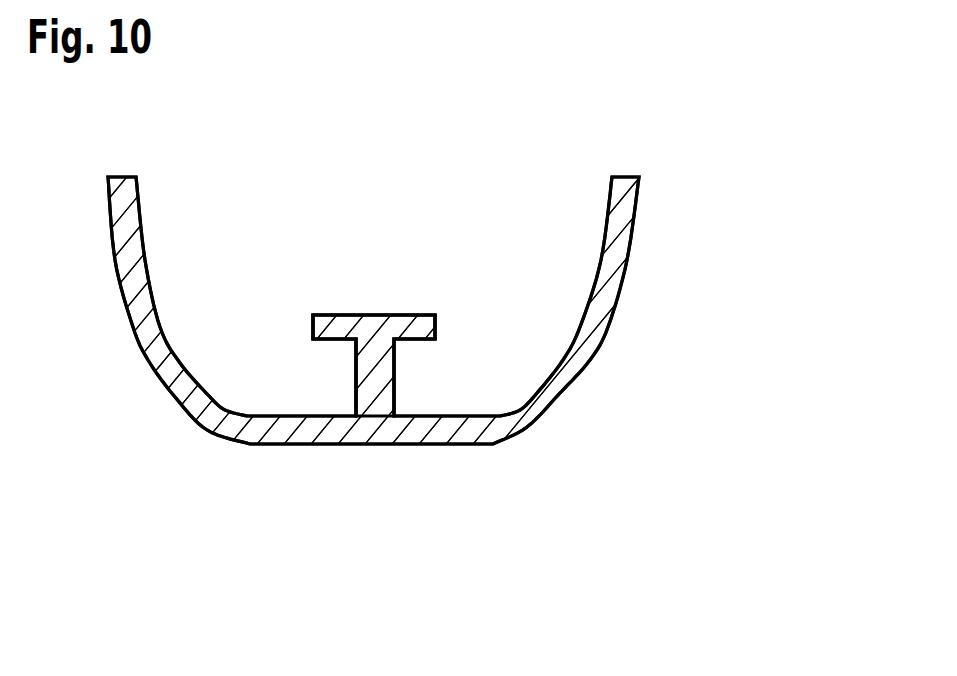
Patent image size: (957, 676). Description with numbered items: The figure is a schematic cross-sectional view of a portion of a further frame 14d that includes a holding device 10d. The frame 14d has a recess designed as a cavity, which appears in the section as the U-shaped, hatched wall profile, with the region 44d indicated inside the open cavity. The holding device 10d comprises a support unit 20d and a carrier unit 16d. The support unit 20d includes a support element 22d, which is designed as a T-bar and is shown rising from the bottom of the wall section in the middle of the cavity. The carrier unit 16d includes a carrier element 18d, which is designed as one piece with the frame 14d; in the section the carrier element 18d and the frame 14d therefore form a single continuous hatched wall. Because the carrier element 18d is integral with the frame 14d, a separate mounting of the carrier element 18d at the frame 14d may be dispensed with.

The holding device 10d is at (263, 495).
The frame 14d is at (478, 230).
The carrier unit 16d is at (357, 510).
The carrier element 18d is at (627, 212).
The support unit 20d is at (480, 510).
The support element 22d is at (385, 327).
The receiving space 44d is at (537, 183).